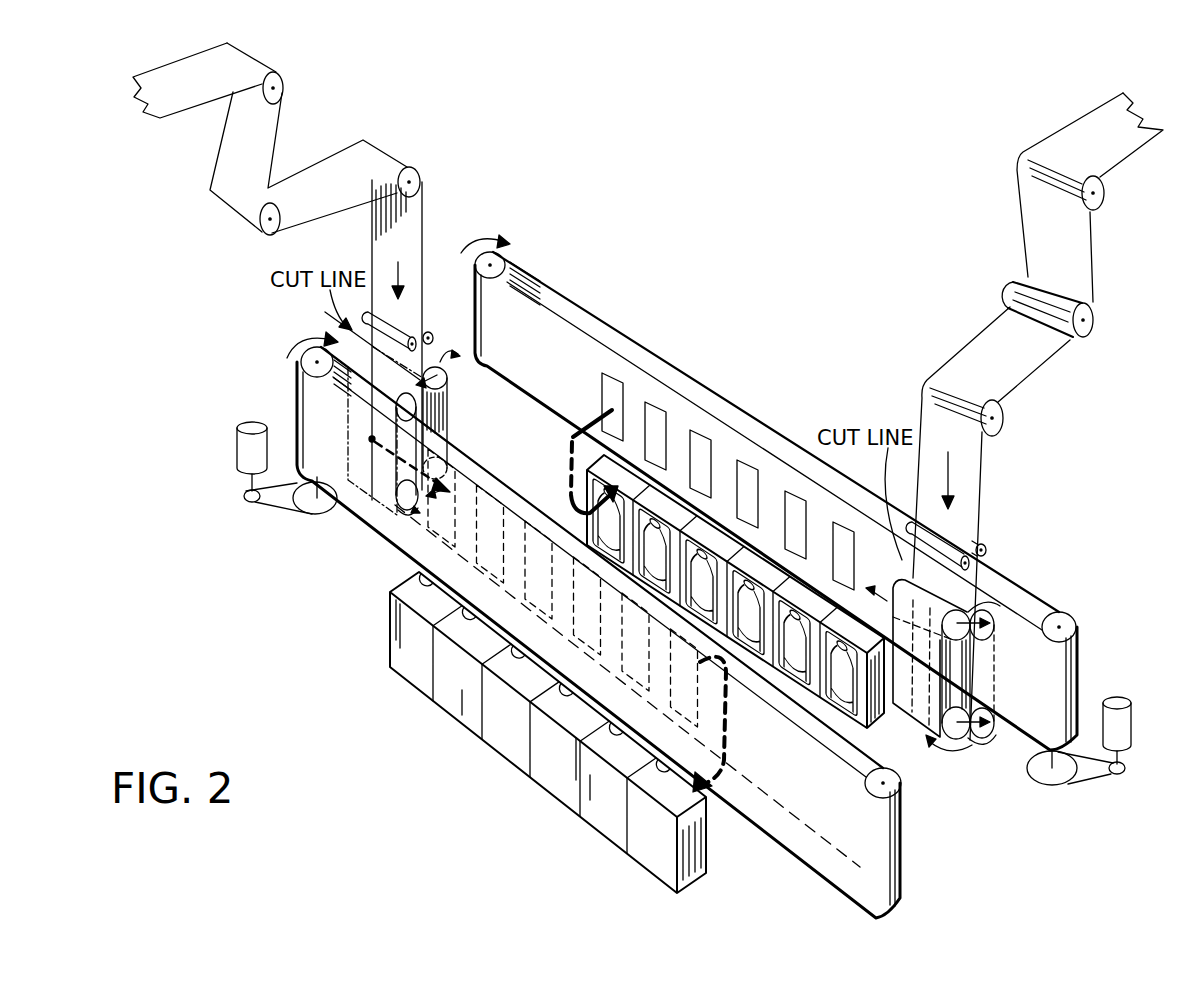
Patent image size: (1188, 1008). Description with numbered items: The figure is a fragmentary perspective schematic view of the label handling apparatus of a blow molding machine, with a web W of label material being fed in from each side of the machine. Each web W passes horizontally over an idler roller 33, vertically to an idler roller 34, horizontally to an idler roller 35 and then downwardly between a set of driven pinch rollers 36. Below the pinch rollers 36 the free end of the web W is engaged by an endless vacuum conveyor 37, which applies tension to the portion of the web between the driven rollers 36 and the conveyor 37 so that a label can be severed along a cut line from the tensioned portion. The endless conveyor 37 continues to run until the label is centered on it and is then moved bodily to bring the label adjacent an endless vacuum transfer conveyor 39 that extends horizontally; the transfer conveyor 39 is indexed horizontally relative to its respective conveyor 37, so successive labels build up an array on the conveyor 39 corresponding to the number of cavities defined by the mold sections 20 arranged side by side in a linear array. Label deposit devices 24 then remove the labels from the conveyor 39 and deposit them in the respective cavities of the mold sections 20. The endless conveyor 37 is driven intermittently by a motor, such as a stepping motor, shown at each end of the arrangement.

The web W is at (170, 95).
The partible molds 20 is at (648, 848).
The label deposit devices 24 is at (730, 788).
The idler roller 33 is at (285, 80).
The idler roller 34 is at (277, 234).
The idler roller 35 is at (421, 176).
The driven pinch rollers 36 is at (984, 548).
The endless vacuum conveyor 37 is at (451, 415).
The endless vacuum transfer conveyor 39 is at (380, 530).